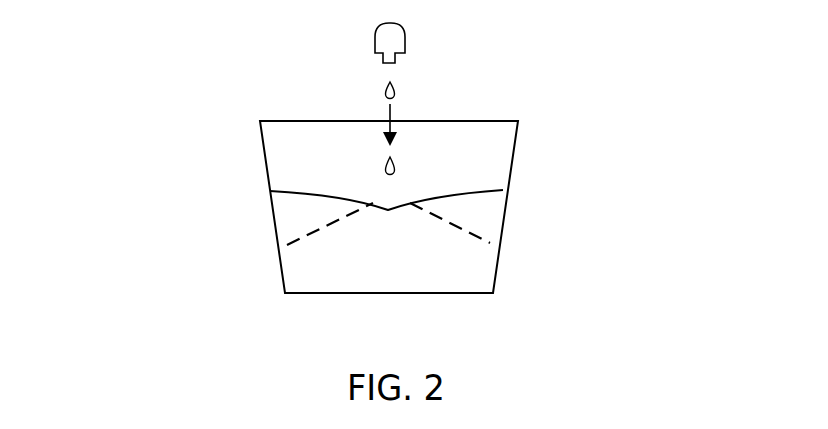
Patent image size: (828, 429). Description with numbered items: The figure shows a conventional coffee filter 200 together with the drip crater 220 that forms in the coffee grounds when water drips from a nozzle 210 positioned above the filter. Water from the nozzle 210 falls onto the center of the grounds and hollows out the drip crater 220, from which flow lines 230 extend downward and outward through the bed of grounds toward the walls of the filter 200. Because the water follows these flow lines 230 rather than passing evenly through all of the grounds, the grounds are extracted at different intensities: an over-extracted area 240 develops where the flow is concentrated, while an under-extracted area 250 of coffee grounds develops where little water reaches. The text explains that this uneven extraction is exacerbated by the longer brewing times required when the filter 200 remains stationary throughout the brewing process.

The coffee filter 200 is at (211, 176).
The nozzle 210 is at (407, 45).
The drip crater 220 is at (388, 209).
The flow lines 230 is at (498, 248).
The over-extracted area 240 is at (322, 277).
The under-extracted area 250 is at (285, 213).